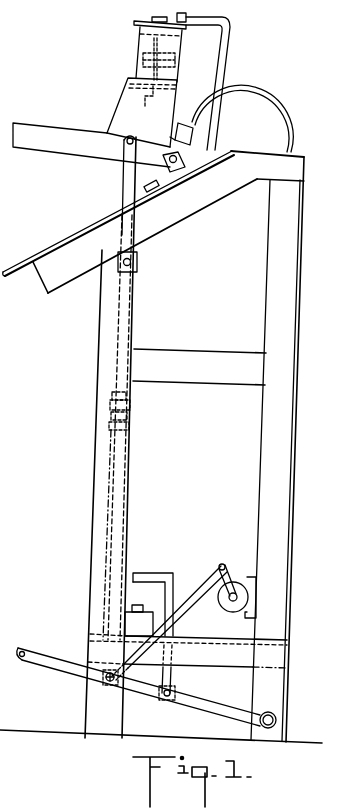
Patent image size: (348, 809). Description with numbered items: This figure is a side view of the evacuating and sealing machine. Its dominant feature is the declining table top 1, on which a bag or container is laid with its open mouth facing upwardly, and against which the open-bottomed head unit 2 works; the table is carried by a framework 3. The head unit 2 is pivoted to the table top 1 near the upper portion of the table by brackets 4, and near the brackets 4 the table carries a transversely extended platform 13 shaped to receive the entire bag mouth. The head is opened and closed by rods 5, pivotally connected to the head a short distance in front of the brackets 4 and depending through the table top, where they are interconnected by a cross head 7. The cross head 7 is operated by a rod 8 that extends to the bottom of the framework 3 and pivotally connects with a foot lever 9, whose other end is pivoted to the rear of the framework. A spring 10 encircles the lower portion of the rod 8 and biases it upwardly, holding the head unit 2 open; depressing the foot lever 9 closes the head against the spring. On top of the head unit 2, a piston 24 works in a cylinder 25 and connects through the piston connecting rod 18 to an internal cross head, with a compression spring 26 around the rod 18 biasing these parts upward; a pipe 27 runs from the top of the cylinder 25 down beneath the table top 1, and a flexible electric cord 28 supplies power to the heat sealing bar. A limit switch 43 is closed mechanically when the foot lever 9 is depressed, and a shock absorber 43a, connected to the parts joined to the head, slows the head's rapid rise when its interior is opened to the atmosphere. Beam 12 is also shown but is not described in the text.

The table top 1 is at (43, 256).
The head unit 2 is at (113, 113).
The framework 3 is at (100, 348).
The brackets 4 is at (200, 168).
The rods 5 is at (123, 177).
The cross head 7 is at (137, 261).
The rod 8 is at (132, 328).
The foot lever 9 is at (53, 660).
The spring 10 is at (108, 420).
The support beam 12 is at (38, 118).
The platform 13 is at (154, 192).
The piston connecting rod 18 is at (150, 99).
The piston 24 is at (137, 35).
The cylinder 25 is at (173, 47).
The compression spring 26 is at (177, 72).
The pipe 27 is at (230, 82).
The flexible electric cord 28 is at (281, 118).
The limit switch 43 is at (137, 619).
The shock absorber 43a is at (241, 565).